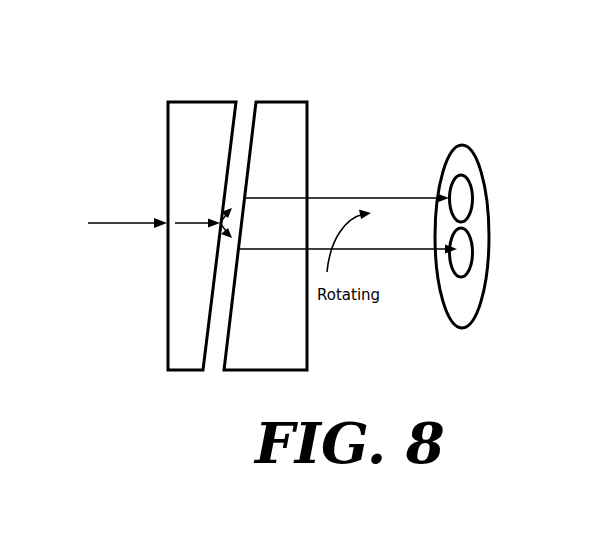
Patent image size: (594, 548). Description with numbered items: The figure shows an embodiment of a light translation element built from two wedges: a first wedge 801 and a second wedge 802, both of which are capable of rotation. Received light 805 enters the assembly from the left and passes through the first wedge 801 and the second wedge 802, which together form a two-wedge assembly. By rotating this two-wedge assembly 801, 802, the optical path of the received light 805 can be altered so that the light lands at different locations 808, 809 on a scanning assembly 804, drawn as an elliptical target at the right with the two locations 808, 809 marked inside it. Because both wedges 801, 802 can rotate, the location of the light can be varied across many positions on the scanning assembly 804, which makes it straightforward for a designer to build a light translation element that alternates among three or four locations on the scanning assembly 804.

The first wedge 801 is at (272, 102).
The second wedge 802 is at (195, 102).
The scanning assembly 804 is at (483, 180).
The received light 805 is at (103, 222).
The location on the scanning assembly 808 is at (472, 252).
The location on the scanning assembly 809 is at (472, 187).